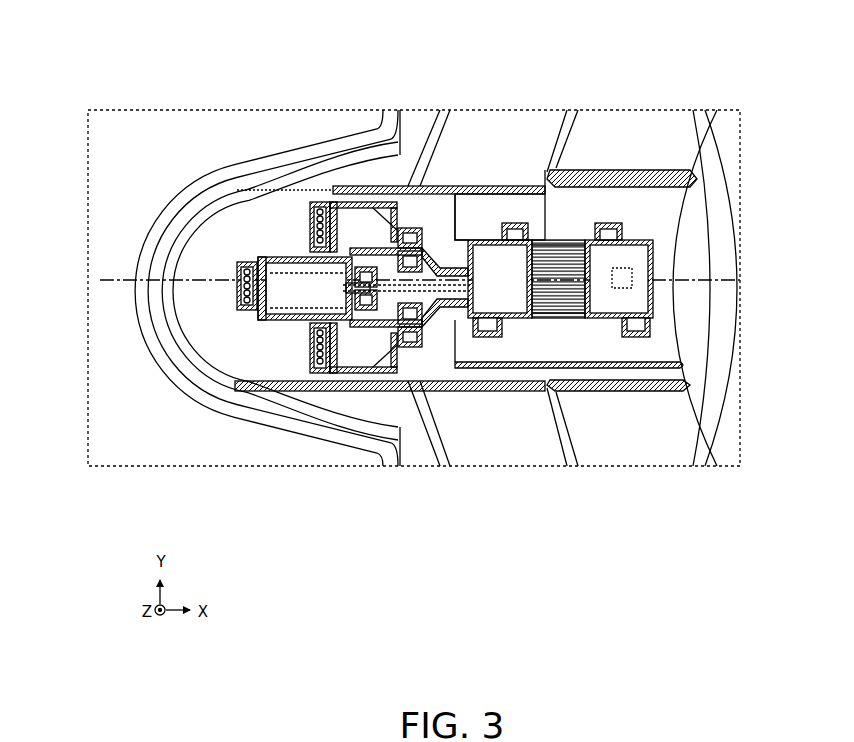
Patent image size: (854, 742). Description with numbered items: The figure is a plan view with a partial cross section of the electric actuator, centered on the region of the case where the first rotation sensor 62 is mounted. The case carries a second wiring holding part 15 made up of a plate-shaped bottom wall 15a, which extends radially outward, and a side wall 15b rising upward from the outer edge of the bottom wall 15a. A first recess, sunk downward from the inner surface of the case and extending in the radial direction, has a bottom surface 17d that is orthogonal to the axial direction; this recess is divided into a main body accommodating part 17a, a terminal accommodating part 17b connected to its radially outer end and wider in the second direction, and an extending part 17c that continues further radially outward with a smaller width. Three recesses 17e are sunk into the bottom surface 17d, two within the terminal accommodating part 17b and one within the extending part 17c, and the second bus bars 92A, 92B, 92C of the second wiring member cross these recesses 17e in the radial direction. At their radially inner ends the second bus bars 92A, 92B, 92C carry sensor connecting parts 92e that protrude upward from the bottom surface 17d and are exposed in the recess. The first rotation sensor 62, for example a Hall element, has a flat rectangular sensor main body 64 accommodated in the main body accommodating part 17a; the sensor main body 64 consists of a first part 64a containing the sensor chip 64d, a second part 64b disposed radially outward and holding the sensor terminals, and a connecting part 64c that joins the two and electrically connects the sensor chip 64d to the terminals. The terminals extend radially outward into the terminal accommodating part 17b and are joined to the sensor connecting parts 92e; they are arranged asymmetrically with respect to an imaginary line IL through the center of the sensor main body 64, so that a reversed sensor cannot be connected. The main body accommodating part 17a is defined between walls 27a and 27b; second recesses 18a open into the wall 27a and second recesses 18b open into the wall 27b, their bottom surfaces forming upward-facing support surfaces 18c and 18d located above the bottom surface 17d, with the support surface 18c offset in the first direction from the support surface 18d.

The second wiring holding part 15 is at (280, 235).
The bottom wall 15a is at (230, 215).
The side wall 15b is at (160, 217).
The second bus bar 92B is at (279, 262).
The sensor connecting part 92e is at (320, 202).
The terminal accommodating part 17b is at (350, 186).
The second bus bar 92A is at (366, 208).
The recess 17e is at (400, 228).
The first rotation sensor 62 is at (447, 228).
The sensor main body 64 is at (482, 237).
The second recess 18a is at (490, 222).
The wall 27a is at (512, 222).
The support surface 18c is at (542, 194).
The connecting part 64c is at (573, 238).
The sensor chip 64d is at (630, 267).
The first part 64a is at (657, 262).
The extending part 17c is at (282, 320).
The second bus bar 92C is at (353, 322).
The bottom surface 17d is at (432, 392).
The second recess 18b is at (480, 340).
The support surface 18d is at (492, 363).
The wall 27b is at (513, 338).
The second part 64b is at (553, 323).
The main body accommodating part 17a is at (573, 323).
The imaginary line IL is at (117, 278).